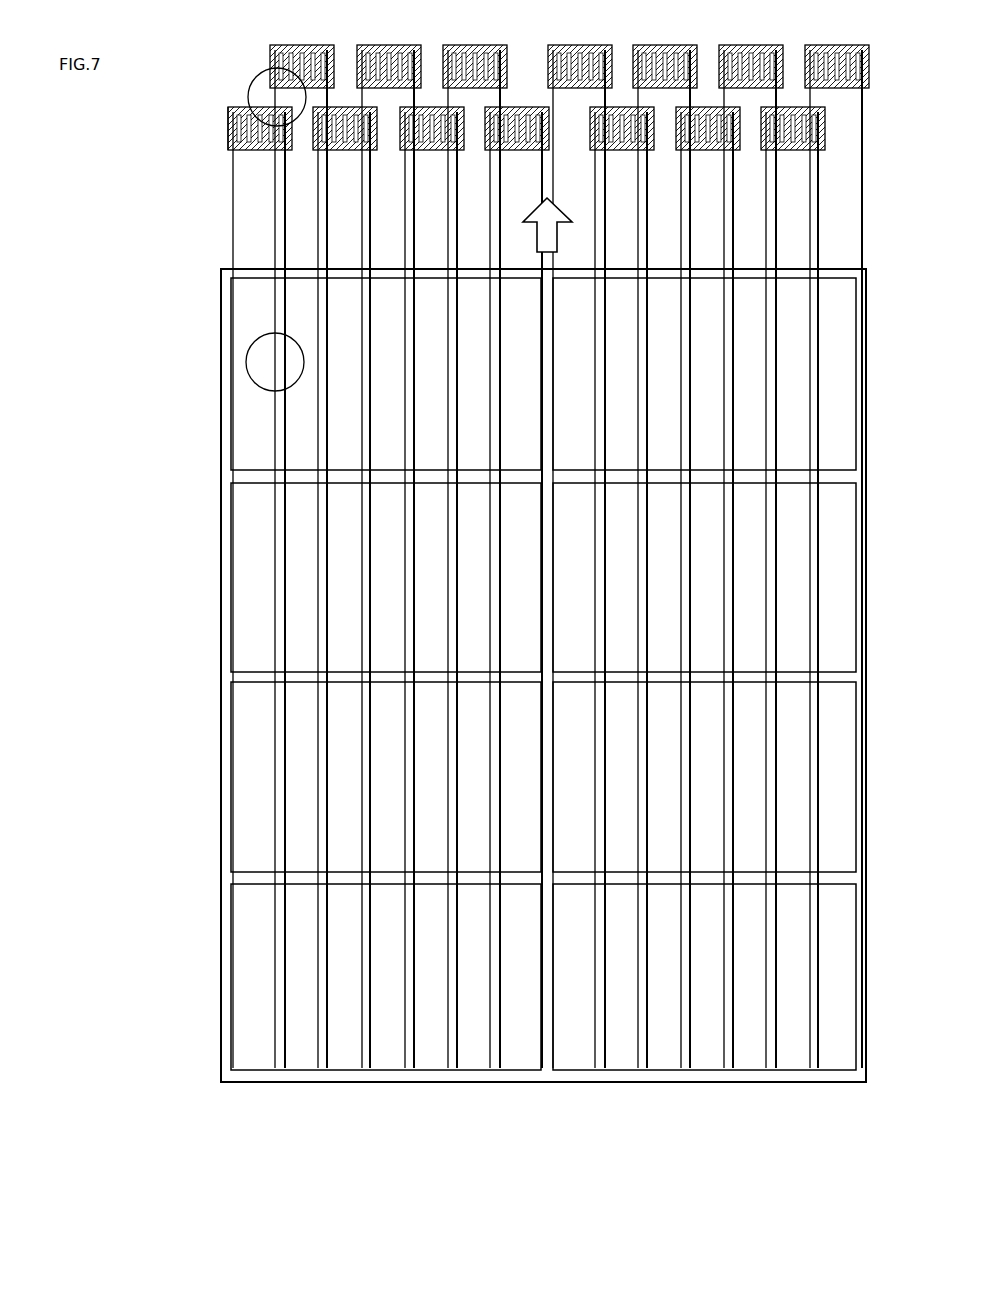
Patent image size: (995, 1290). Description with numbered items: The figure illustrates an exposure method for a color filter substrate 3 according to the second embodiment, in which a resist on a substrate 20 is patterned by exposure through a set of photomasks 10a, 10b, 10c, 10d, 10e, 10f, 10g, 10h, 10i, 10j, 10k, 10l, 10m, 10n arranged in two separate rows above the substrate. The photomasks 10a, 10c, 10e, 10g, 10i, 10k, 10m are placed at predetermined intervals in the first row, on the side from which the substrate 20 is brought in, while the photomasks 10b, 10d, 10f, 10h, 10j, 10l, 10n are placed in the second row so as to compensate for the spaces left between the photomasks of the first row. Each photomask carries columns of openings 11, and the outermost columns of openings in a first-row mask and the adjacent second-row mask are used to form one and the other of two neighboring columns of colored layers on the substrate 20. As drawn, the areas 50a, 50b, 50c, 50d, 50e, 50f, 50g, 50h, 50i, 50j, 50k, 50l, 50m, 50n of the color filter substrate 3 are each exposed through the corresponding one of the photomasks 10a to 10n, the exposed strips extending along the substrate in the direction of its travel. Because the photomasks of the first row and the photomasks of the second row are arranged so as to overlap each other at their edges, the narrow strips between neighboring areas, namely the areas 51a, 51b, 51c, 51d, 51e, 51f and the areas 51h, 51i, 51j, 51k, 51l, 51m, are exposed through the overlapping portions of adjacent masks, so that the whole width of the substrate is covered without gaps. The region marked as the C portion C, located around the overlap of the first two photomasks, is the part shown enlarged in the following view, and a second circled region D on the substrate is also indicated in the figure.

The color filter substrate 3 is at (231, 278).
The substrate 20 is at (221, 645).
The openings 11 is at (228, 128).
The photomask 10a is at (230, 107).
The photomask 10b is at (272, 45).
The photomask 10c is at (315, 150).
The photomask 10d is at (359, 45).
The photomask 10e is at (402, 150).
The photomask 10f is at (445, 45).
The photomask 10g is at (487, 150).
The photomask 10h is at (550, 45).
The photomask 10i is at (592, 150).
The photomask 10j is at (635, 45).
The photomask 10k is at (678, 150).
The photomask 10l is at (721, 45).
The photomask 10m is at (763, 150).
The photomask 10n is at (807, 45).
The area 50a is at (244, 1062).
The area 50b is at (291, 1062).
The area 50c is at (336, 1062).
The area 50d is at (380, 1062).
The area 50e is at (424, 1062).
The area 50f is at (467, 1062).
The area 50g is at (512, 1062).
The area 50h is at (569, 1062).
The area 50i is at (612, 1062).
The area 50j is at (657, 1062).
The area 50k is at (701, 1062).
The area 50l is at (741, 1062).
The area 50m is at (786, 1062).
The area 50n is at (834, 1062).
The area 51a is at (282, 1062).
The area 51b is at (324, 1062).
The area 51c is at (367, 1062).
The area 51d is at (411, 1062).
The area 51e is at (454, 1062).
The area 51f is at (497, 1062).
The area 51h is at (602, 1062).
The area 51i is at (644, 1062).
The area 51j is at (687, 1062).
The area 51k is at (730, 1062).
The area 51l is at (773, 1062).
The area 51m is at (815, 1062).
The C portion C is at (250, 85).
The region D is at (246, 362).